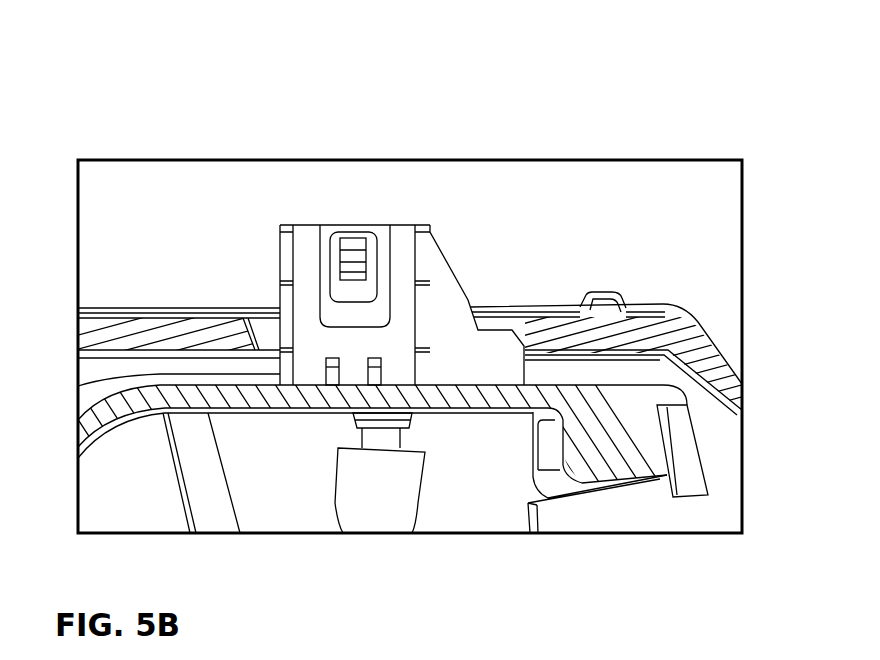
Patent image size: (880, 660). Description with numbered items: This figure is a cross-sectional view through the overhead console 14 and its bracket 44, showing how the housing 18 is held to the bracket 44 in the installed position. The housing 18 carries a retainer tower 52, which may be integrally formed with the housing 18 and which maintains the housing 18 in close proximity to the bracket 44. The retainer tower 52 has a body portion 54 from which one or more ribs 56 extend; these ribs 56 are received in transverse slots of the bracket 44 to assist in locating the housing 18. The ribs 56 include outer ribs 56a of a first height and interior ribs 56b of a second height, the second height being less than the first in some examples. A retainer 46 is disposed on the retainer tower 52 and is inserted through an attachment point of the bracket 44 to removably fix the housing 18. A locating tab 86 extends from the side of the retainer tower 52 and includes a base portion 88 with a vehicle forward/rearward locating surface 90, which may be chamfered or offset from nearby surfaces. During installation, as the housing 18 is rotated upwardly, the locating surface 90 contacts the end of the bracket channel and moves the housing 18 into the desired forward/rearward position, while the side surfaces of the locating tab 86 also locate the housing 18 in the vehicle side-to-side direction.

The overhead console 14 is at (103, 438).
The housing 18 is at (92, 428).
The bracket 44 is at (680, 340).
The retainer 46 is at (340, 246).
The retainer tower 52 is at (277, 236).
The body portion 54 is at (311, 294).
The rib 56 is at (284, 222).
The outer rib 56a is at (431, 297).
The interior rib 56b is at (375, 372).
The locating tab 86 is at (520, 378).
The base portion 88 is at (573, 343).
The locating surface 90 is at (498, 362).